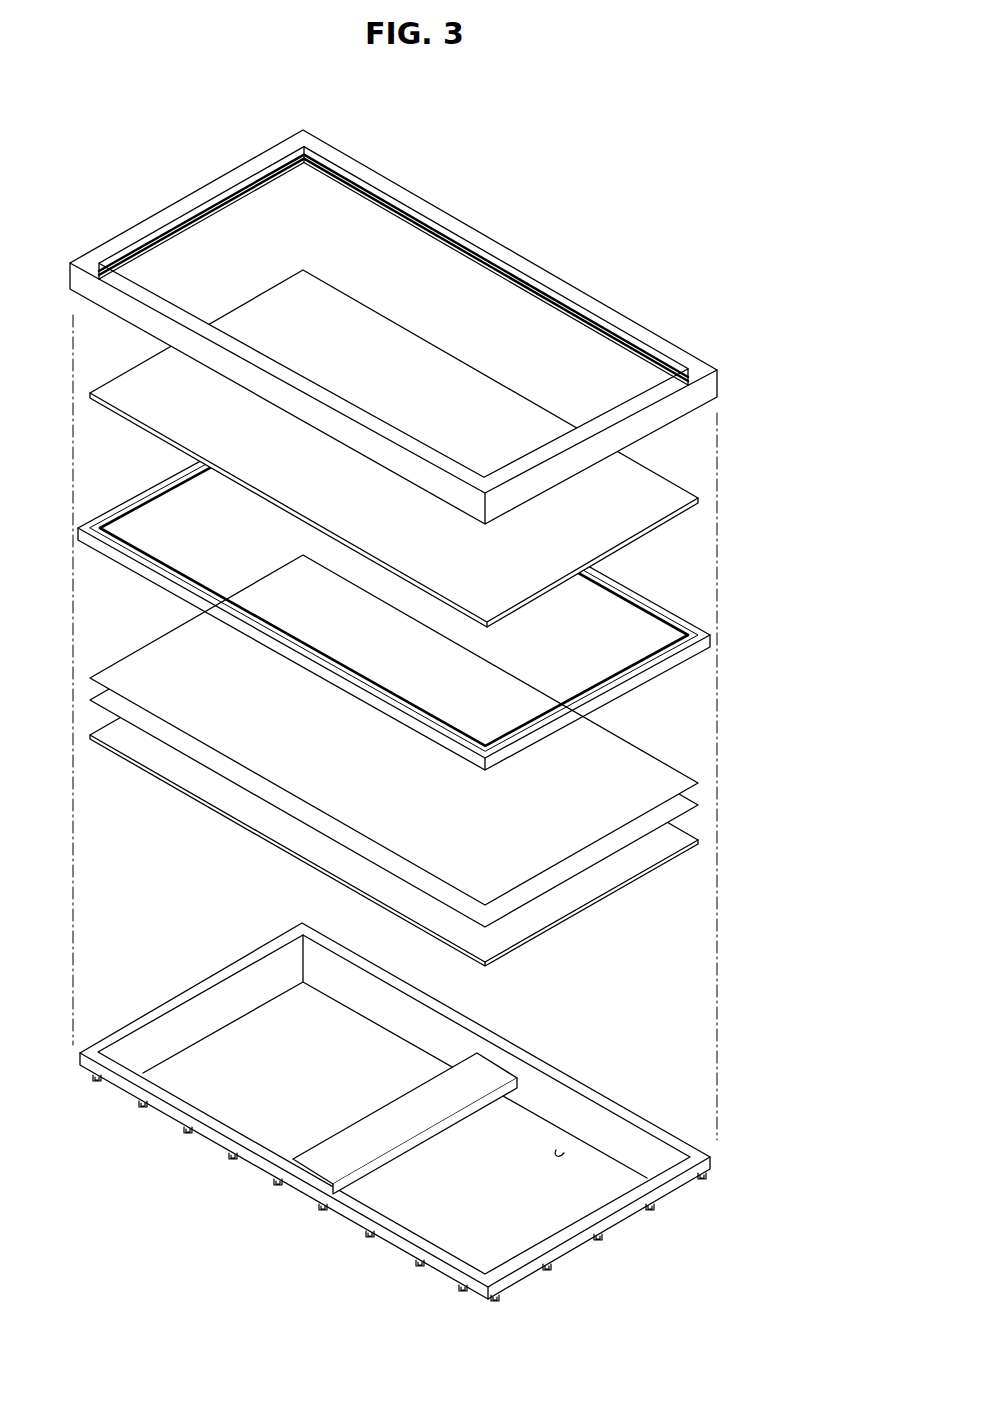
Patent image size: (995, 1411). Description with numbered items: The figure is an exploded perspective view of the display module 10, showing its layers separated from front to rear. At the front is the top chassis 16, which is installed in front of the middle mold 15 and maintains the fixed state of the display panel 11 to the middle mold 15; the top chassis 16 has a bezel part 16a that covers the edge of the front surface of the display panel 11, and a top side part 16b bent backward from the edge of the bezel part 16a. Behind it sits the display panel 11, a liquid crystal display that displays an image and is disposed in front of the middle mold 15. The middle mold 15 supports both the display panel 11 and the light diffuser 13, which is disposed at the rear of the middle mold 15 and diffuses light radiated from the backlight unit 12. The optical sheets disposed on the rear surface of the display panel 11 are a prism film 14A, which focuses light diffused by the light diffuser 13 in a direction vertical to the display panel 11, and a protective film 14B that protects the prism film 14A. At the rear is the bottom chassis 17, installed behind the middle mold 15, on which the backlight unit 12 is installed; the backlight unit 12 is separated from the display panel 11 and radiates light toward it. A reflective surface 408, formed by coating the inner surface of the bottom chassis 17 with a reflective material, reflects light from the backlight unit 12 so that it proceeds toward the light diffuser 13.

The display module 10 is at (644, 206).
The display panel 11 is at (699, 494).
The backlight unit 12 is at (490, 1074).
The light diffuser 13 is at (703, 841).
The prism film 14A is at (698, 806).
The protective film 14B is at (699, 782).
The middle mold 15 is at (711, 633).
The top chassis 16 is at (429, 327).
The bezel part 16a is at (657, 331).
The top side part 16b is at (719, 370).
The bottom chassis 17 is at (679, 1183).
The reflective surface 408 is at (556, 1150).